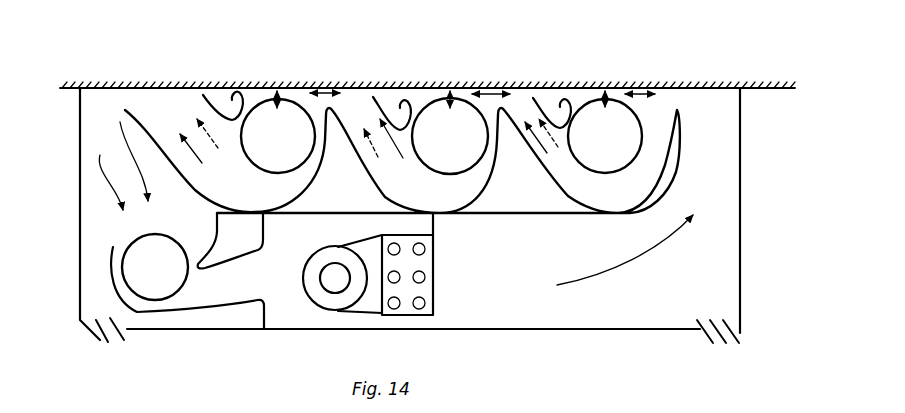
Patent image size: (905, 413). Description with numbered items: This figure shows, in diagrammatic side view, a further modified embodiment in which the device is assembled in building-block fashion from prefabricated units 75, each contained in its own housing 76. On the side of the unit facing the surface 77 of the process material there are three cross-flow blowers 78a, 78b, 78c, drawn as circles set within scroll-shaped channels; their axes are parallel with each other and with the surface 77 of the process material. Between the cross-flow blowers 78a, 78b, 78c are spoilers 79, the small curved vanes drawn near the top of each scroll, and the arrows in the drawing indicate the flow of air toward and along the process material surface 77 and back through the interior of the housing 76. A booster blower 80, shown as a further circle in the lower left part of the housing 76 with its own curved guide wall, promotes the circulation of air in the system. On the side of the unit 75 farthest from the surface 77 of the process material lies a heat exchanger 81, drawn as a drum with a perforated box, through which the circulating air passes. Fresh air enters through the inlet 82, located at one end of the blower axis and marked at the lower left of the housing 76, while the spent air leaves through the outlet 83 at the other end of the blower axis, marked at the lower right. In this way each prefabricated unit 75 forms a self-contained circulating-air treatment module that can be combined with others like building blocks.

The prefabricated unit 75 is at (525, 100).
The housing 76 is at (730, 158).
The surface of the process material 77 is at (697, 90).
The cross-flow blower 78a is at (287, 113).
The cross-flow blower 78b is at (458, 110).
The cross-flow blower 78c is at (595, 110).
The spoiler 79 is at (378, 108).
The booster blower 80 is at (157, 290).
The heat exchanger 81 is at (420, 305).
The inlet for the fresh air 82 is at (100, 338).
The outlet for the spent air 83 is at (707, 338).